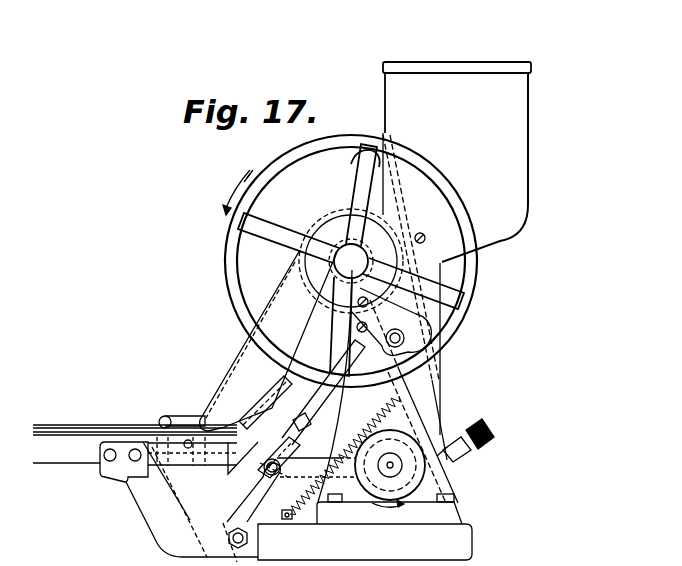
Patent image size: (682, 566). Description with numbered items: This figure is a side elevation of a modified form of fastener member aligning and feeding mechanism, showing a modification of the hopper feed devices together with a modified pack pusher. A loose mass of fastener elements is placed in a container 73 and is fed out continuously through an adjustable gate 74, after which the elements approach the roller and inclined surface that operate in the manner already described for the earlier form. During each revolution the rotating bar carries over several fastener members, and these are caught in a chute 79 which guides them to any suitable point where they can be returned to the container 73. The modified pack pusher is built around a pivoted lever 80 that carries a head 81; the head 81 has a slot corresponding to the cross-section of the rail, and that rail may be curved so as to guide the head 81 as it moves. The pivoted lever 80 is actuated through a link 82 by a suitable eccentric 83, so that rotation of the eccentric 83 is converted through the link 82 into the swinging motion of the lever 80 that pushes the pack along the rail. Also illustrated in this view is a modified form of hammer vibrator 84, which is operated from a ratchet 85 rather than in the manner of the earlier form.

The container 73 is at (516, 168).
The adjustable gate 74 is at (363, 149).
The chute 79 is at (246, 371).
The pivoted lever 80 is at (265, 491).
The head 81 is at (296, 448).
The link 82 is at (312, 465).
The eccentric 83 is at (426, 480).
The hammer vibrator 84 is at (320, 396).
The ratchet 85 is at (418, 499).